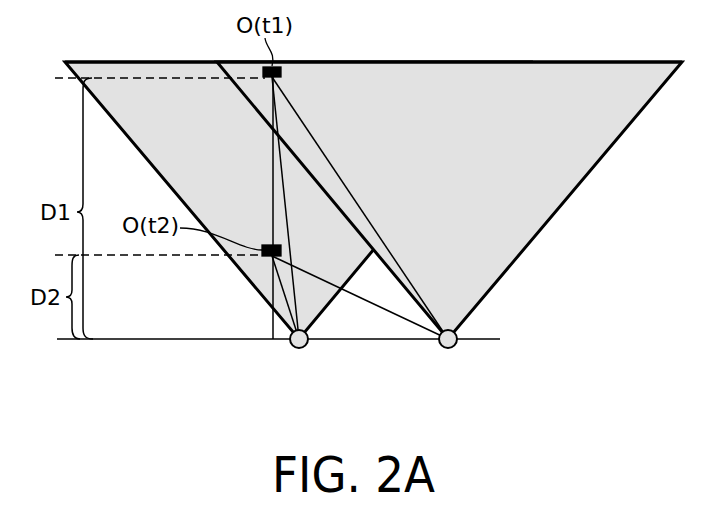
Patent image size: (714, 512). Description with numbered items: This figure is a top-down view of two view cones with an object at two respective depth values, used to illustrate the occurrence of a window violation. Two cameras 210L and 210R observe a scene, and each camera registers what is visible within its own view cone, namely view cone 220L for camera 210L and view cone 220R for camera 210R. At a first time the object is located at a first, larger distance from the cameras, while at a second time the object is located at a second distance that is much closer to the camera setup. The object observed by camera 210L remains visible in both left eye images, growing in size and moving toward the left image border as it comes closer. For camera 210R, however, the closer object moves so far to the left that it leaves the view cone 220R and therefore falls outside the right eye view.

The left camera 210L is at (300, 349).
The right camera 210R is at (448, 349).
The left view cone 220L is at (247, 278).
The right view cone 220R is at (550, 222).